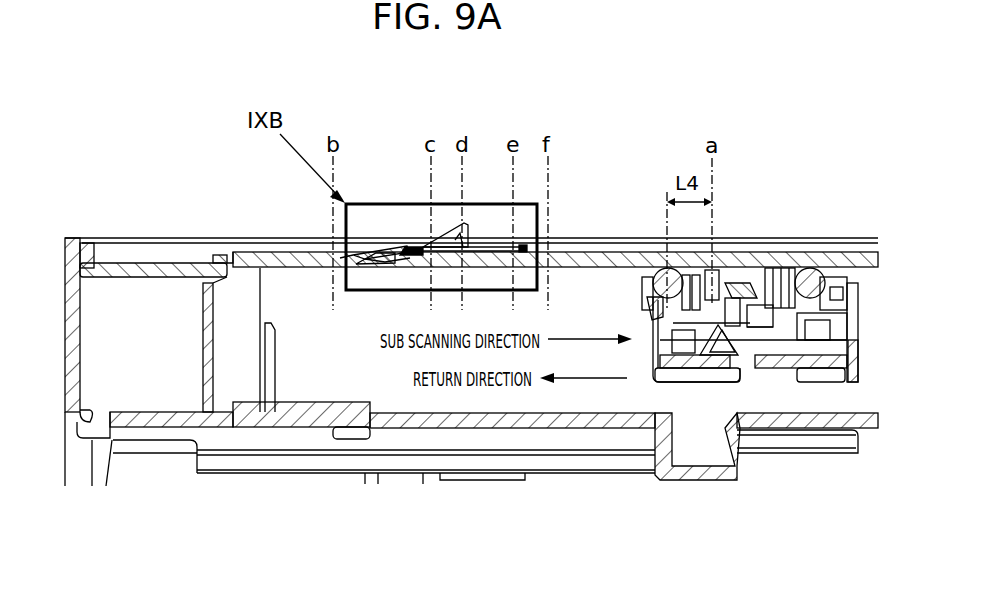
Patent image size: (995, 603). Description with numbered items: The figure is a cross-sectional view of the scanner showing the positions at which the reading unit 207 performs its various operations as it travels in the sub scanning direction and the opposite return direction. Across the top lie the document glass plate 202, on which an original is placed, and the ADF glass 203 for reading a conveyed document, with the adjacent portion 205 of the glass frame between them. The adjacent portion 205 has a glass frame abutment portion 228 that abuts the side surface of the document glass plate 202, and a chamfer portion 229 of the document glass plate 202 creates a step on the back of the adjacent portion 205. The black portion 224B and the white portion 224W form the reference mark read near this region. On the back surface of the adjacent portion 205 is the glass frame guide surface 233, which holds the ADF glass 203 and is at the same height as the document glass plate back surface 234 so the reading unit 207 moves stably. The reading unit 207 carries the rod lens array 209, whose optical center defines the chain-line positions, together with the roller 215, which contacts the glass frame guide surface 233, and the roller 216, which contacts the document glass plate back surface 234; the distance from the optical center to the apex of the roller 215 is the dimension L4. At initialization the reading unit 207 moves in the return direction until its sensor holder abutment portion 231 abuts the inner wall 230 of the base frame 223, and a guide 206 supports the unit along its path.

The document glass plate 202 is at (865, 256).
The ADF glass 203 is at (257, 252).
The adjacent portion 205 is at (392, 246).
The carriage guide 206 is at (760, 318).
The reading unit 207 is at (828, 362).
The rod lens array 209 is at (722, 278).
The roller 215 is at (655, 268).
The roller 216 is at (803, 270).
The base frame 223 is at (72, 257).
The black portion 224B is at (418, 246).
The white reference portion 224W is at (482, 250).
The glass frame abutment portion 228 is at (408, 256).
The chamfer portion 229 is at (408, 262).
The inner wall 230 is at (277, 358).
The sensor holder abutment portion 231 is at (651, 358).
The glass frame guide surface 233 is at (407, 250).
The document glass plate back surface 234 is at (583, 262).